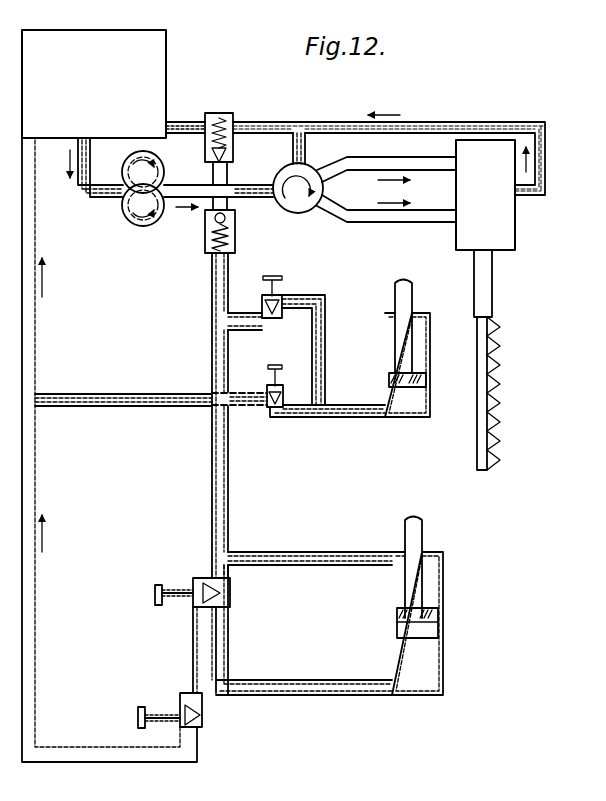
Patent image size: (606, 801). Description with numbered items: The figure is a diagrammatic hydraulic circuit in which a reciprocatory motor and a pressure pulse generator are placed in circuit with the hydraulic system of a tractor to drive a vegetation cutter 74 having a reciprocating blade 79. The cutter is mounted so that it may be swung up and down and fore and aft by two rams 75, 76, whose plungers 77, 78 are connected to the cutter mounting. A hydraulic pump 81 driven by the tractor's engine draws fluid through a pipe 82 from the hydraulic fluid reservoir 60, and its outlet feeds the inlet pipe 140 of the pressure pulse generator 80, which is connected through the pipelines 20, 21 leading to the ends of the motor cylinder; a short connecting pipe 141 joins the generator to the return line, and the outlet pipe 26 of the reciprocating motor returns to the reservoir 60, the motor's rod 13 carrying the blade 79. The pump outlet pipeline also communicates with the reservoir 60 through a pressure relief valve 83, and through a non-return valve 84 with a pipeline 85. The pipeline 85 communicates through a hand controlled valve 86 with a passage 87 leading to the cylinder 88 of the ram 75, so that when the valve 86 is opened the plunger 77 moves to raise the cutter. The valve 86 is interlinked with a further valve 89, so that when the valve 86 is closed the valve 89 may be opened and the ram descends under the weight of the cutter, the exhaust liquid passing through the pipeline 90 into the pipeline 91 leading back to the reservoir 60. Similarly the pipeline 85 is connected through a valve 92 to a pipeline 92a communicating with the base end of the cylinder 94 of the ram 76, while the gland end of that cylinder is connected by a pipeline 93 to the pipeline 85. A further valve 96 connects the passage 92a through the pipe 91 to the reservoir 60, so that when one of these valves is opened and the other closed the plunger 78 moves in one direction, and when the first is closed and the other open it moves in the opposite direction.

The hydraulic fluid reservoir 60 is at (145, 70).
The pipeline 91 is at (27, 330).
The pipe 82 is at (100, 190).
The hydraulic pump 81 is at (160, 186).
The pressure relief valve 83 is at (227, 147).
The non-return valve 84 is at (207, 224).
The pipeline 85 is at (215, 356).
The inlet pipe 140 is at (263, 185).
The pipe from rotary valve 141 is at (303, 162).
The pressure pulse generator 80 is at (303, 172).
The pipeline 20 is at (423, 160).
The pipeline 21 is at (432, 213).
The outlet pipe 26 is at (508, 127).
The piston rod 13 is at (478, 269).
The reciprocating blade 79 is at (500, 343).
The vegetation cutter 74 is at (498, 482).
The plunger 77 is at (403, 296).
The ram 75 is at (420, 416).
The cylinder 88 is at (426, 380).
The hand controlled valve 86 is at (277, 300).
The passage 87 is at (345, 358).
The valve 89 is at (272, 410).
The pipeline 90 is at (113, 398).
The valve 92 is at (198, 580).
The pipeline 93 is at (327, 557).
The pipeline 92a is at (315, 687).
The valve 96 is at (182, 710).
The ram 76 is at (443, 691).
The plunger 78 is at (418, 525).
The cylinder 94 is at (443, 648).